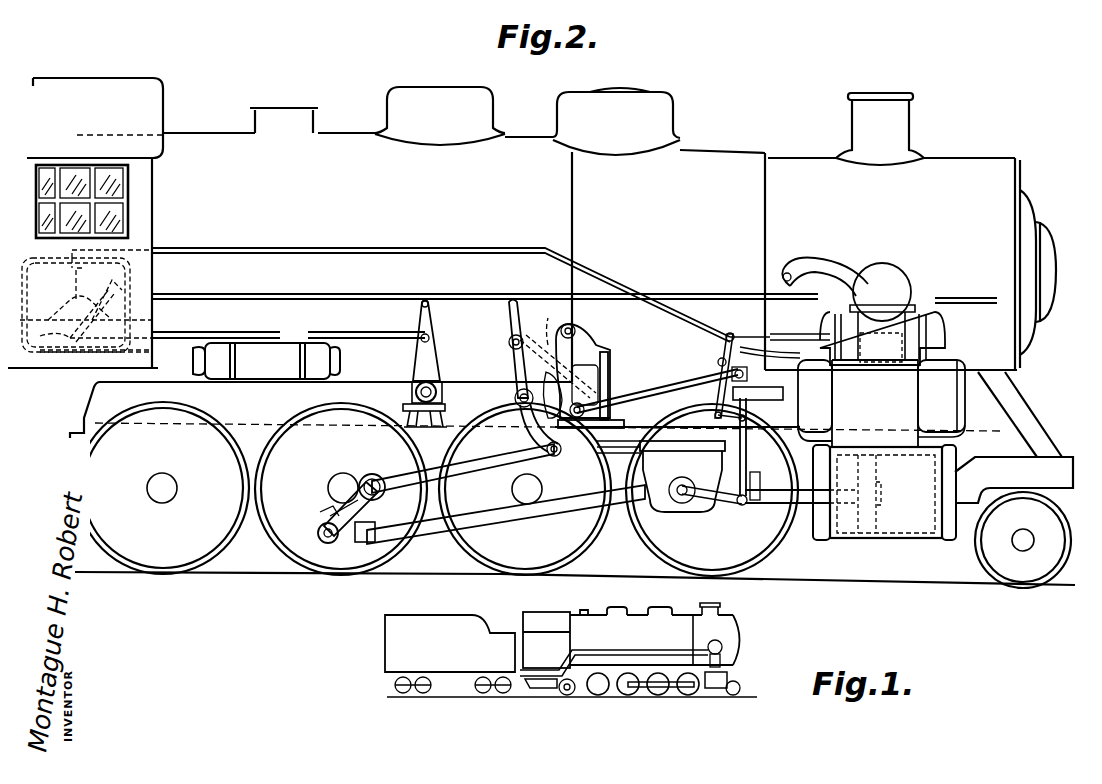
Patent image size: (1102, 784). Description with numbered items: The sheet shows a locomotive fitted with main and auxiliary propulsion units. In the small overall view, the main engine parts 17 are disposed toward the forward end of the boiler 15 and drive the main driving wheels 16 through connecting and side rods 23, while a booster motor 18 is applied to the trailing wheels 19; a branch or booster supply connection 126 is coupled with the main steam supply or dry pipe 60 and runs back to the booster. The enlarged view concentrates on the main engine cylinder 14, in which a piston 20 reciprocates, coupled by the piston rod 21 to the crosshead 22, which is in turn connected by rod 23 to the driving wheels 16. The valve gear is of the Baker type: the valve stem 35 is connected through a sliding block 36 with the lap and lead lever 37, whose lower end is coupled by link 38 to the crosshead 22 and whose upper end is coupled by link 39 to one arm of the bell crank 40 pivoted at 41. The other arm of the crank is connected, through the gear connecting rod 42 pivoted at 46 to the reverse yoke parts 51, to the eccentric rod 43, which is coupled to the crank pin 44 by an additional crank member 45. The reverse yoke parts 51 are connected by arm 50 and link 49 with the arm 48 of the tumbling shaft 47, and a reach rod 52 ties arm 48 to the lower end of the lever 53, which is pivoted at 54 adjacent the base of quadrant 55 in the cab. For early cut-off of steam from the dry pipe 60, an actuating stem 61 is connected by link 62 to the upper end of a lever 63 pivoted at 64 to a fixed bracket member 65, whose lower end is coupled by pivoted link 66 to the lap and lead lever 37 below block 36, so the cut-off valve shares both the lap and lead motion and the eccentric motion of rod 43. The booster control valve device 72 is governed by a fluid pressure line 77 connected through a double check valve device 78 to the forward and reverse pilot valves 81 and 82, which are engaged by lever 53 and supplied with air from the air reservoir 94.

In FIG. 2, the main engine cylinder 14 is at (912, 535).
In FIG. 1, the boiler 15 is at (640, 617).
In FIG. 2, the main driving wheels 16 is at (258, 556).
In FIG. 1, the main driving wheels 16 is at (606, 694).
In FIG. 1, the main engine parts 17 is at (728, 680).
In FIG. 1, the booster motor 18 is at (548, 689).
In FIG. 1, the trailing wheels 19 is at (570, 694).
In FIG. 2, the piston 20 is at (855, 533).
In FIG. 2, the piston rod 21 is at (775, 500).
In FIG. 2, the crosshead 22 is at (676, 503).
In FIG. 2, the connecting and side rods 23 is at (512, 526).
In FIG. 1, the connecting and side rods 23 is at (650, 690).
In FIG. 2, the valve stem 35 is at (800, 388).
In FIG. 2, the sliding block 36 is at (755, 390).
In FIG. 2, the lap and lead lever 37 is at (748, 470).
In FIG. 2, the link 38 is at (722, 500).
In FIG. 2, the link 39 is at (632, 394).
In FIG. 2, the bell crank 40 is at (548, 345).
In FIG. 2, the pivot 41 is at (576, 327).
In FIG. 2, the gear connecting rod 42 is at (533, 432).
In FIG. 2, the eccentric rod 43 is at (486, 462).
In FIG. 2, the crank pin 44 is at (320, 525).
In FIG. 2, the crank member 45 is at (340, 497).
In FIG. 2, the pivot 46 is at (558, 452).
In FIG. 2, the tumbling shaft 47 is at (438, 394).
In FIG. 2, the arm 48 is at (420, 350).
In FIG. 2, the link 49 is at (492, 302).
In FIG. 2, the arm 50 is at (510, 339).
In FIG. 2, the reverse yoke parts 51 is at (528, 330).
In FIG. 2, the reach rod 52 is at (242, 336).
In FIG. 2, the lever 53 is at (115, 282).
In FIG. 2, the pivot 54 is at (60, 352).
In FIG. 2, the quadrant 55 is at (62, 300).
In FIG. 2, the dry pipe 60 is at (905, 292).
In FIG. 2, the actuating stem 61 is at (800, 327).
In FIG. 2, the link 62 is at (757, 327).
In FIG. 2, the lever 63 is at (724, 338).
In FIG. 2, the pivot 64 is at (718, 361).
In FIG. 2, the fixed bracket member 65 is at (733, 380).
In FIG. 2, the pivoted link 66 is at (718, 417).
In FIG. 2, the control valve device 72 is at (866, 365).
In FIG. 2, the fluid pressure line 77 is at (255, 248).
In FIG. 2, the double check valve device 78 is at (80, 300).
In FIG. 2, the forward pilot valve 81 is at (150, 320).
In FIG. 2, the reverse pilot valve 82 is at (40, 336).
In FIG. 2, the air reservoir 94 is at (266, 361).
In FIG. 2, the booster supply connection 126 is at (842, 250).
In FIG. 1, the booster supply connection 126 is at (628, 653).